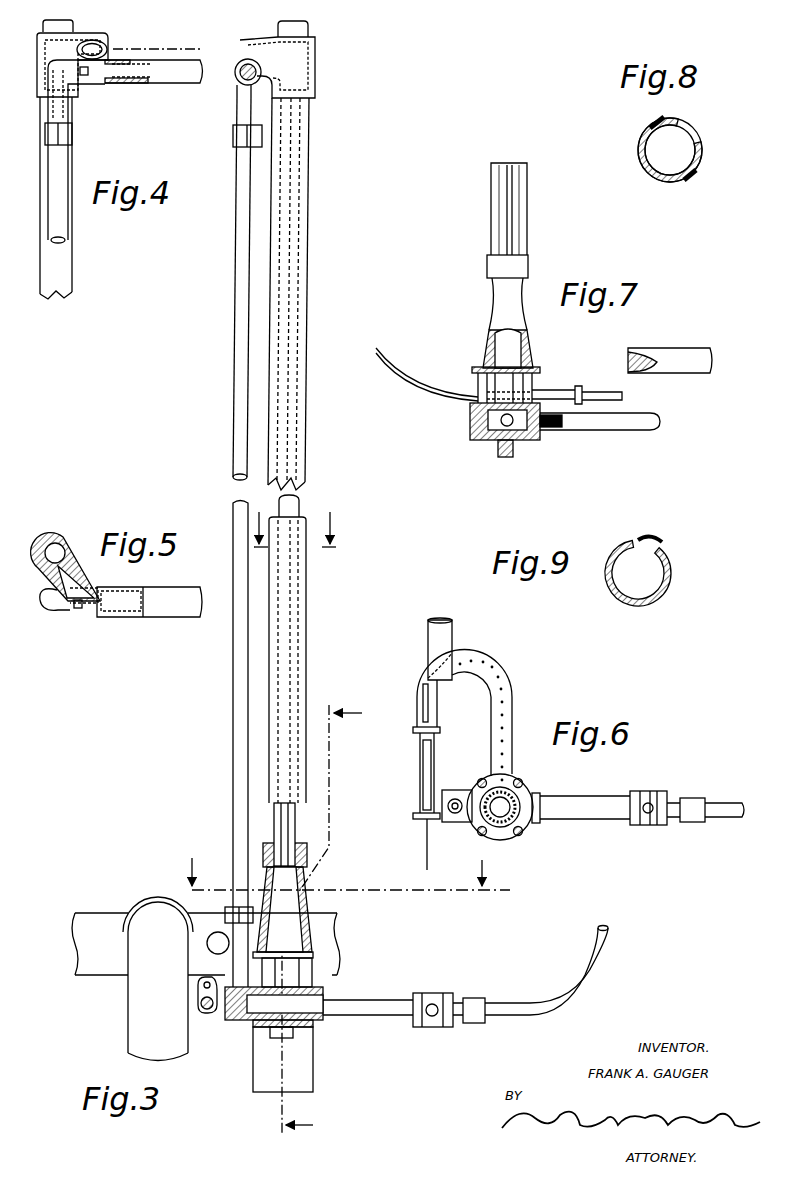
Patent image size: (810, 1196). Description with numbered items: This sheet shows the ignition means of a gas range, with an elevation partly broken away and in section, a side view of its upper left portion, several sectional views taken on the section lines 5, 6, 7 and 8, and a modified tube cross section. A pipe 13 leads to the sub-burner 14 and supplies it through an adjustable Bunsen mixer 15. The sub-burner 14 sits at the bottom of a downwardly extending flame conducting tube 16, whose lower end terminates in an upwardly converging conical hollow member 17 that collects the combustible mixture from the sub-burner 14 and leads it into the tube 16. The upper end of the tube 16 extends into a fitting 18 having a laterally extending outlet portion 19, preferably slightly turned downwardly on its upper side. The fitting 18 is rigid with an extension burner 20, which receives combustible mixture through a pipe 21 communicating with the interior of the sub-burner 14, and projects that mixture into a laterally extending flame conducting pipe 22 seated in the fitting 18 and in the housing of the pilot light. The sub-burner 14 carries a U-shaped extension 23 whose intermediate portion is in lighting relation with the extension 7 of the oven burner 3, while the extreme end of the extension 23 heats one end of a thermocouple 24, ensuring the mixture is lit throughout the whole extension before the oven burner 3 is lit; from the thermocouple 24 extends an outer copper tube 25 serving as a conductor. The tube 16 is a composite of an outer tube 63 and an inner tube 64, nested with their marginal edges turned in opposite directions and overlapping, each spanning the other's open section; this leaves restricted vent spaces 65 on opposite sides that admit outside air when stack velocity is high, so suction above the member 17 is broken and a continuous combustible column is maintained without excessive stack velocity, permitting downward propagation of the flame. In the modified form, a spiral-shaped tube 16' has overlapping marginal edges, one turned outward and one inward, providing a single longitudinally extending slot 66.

In FIG. 3, the oven burner 3 is at (88, 913).
In FIG. 4, the section line 5— 5 is at (24, 14).
In FIG. 3, the section line 6— 6 is at (334, 881).
In FIG. 3, the extension of the oven burner 7 is at (218, 932).
In FIG. 7, the extension of the oven burner 7 is at (696, 373).
In FIG. 6, the extension of the oven burner 7 is at (452, 639).
In FIG. 3, the section line 8— 8 is at (294, 521).
In FIG. 3, the pipe 13 is at (600, 955).
In FIG. 6, the pipe 13 is at (722, 826).
In FIG. 3, the sub-burner 14 is at (318, 988).
In FIG. 7, the sub-burner 14 is at (468, 424).
In FIG. 6, the sub-burner 14 is at (526, 834).
In FIG. 3, the adjustable Bunsen mixer 15 is at (413, 1026).
In FIG. 6, the adjustable Bunsen mixer 15 is at (631, 828).
In FIG. 4, the flame conducting tube 16 is at (78, 198).
In FIG. 3, the flame conducting tube 16 is at (307, 450).
In FIG. 7, the flame conducting tube 16 is at (486, 209).
In FIG. 8, the flame conducting tube 16 is at (649, 150).
In FIG. 9, the spiral tube 16' is at (628, 584).
In FIG. 3, the conical hollow member 17 is at (306, 906).
In FIG. 7, the conical hollow member 17 is at (492, 308).
In FIG. 6, the conical hollow member 17 is at (514, 803).
In FIG. 5, the fitting 18 is at (68, 540).
In FIG. 3, the fitting 18 is at (316, 78).
In FIG. 4, the laterally extending outlet portion 19 is at (97, 47).
In FIG. 5, the laterally extending outlet portion 19 is at (90, 618).
In FIG. 3, the laterally extending outlet portion 19 is at (238, 64).
In FIG. 4, the extension burner 20 is at (87, 78).
In FIG. 5, the extension burner 20 is at (76, 616).
In FIG. 3, the extension burner 20 is at (243, 84).
In FIG. 4, the pipe 21 is at (64, 236).
In FIG. 3, the pipe 21 is at (235, 722).
In FIG. 4, the flame conducting pipe 22 is at (174, 83).
In FIG. 5, the flame conducting pipe 22 is at (178, 620).
In FIG. 3, the flame conducting pipe 22 is at (251, 88).
In FIG. 7, the U-shaped extension 23 is at (638, 428).
In FIG. 6, the U-shaped extension 23 is at (508, 688).
In FIG. 7, the thermocouple 24 is at (548, 392).
In FIG. 6, the thermocouple 24 is at (425, 766).
In FIG. 7, the outer copper tube 25 is at (400, 375).
In FIG. 3, the outer tube 63 is at (302, 688).
In FIG. 7, the outer tube 63 is at (490, 224).
In FIG. 8, the outer tube 63 is at (655, 181).
In FIG. 5, the inner tube 64 is at (60, 538).
In FIG. 3, the inner tube 64 is at (297, 840).
In FIG. 7, the inner tube 64 is at (515, 212).
In FIG. 8, the inner tube 64 is at (702, 144).
In FIG. 8, the restricted vent spaces 65 is at (670, 124).
In FIG. 9, the longitudinally extending slot 66 is at (656, 546).